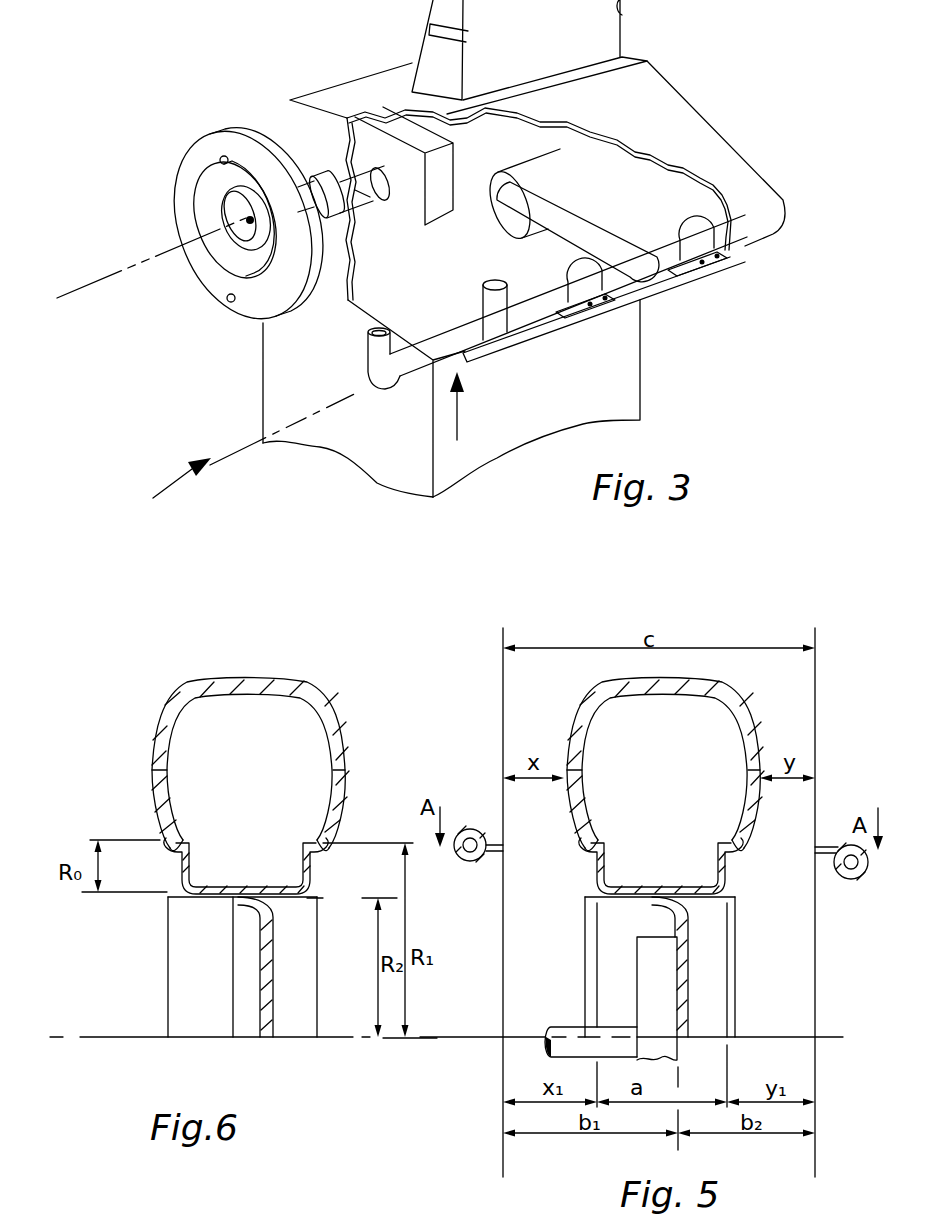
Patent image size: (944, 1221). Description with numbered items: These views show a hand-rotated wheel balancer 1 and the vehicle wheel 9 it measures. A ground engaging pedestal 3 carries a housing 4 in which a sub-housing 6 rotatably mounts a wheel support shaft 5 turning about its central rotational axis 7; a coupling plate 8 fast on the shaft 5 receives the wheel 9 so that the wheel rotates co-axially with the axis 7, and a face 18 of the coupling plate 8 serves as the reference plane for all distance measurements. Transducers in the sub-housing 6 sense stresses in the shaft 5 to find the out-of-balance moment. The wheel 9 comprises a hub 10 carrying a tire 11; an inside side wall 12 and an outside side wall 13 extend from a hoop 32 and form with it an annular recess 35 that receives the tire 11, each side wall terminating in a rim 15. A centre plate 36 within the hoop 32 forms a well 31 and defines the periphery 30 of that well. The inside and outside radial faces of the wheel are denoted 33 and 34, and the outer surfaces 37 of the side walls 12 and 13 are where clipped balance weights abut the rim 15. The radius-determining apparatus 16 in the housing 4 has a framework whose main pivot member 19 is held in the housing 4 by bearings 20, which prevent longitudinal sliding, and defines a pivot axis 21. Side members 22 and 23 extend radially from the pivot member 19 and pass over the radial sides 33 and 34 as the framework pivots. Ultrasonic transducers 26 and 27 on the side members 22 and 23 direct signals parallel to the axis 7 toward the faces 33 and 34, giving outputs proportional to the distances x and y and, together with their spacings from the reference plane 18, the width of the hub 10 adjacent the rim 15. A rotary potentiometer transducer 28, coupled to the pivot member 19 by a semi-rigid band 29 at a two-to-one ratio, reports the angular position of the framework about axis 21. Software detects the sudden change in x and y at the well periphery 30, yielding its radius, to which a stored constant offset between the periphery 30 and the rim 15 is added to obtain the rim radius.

In FIG. 3, the wheel balancer 1 is at (172, 489).
In FIG. 3, the ground engaging pedestal 3 is at (390, 473).
In FIG. 3, the housing 4 is at (663, 91).
In FIG. 3, the wheel support shaft 5 is at (363, 193).
In FIG. 5, the wheel support shaft 5 is at (560, 1028).
In FIG. 3, the sub-housing 6 is at (442, 202).
In FIG. 3, the rotational axis 7 is at (108, 268).
In FIG. 6, the rotational axis 7 is at (116, 1040).
In FIG. 5, the rotational axis 7 is at (828, 1045).
In FIG. 3, the coupling plate 8 is at (210, 292).
In FIG. 5, the coupling plate 8 is at (643, 980).
In FIG. 6, the vehicle wheel 9 is at (285, 682).
In FIG. 5, the vehicle wheel 9 is at (713, 983).
In FIG. 6, the hub 10 is at (303, 916).
In FIG. 5, the hub 10 is at (610, 943).
In FIG. 6, the tire 11 is at (333, 720).
In FIG. 5, the tire 11 is at (697, 692).
In FIG. 6, the inside side wall 12 is at (170, 878).
In FIG. 5, the inside side wall 12 is at (590, 877).
In FIG. 6, the outside side wall 13 is at (320, 883).
In FIG. 6, the rim 15 is at (166, 846).
In FIG. 5, the rim 15 is at (580, 847).
In FIG. 3, the radius determining apparatus 16 is at (471, 406).
In FIG. 3, the face of coupling plate 18 is at (182, 172).
In FIG. 5, the face of coupling plate 18 is at (680, 1057).
In FIG. 3, the main pivot member 19 is at (540, 307).
In FIG. 3, the bearings 20 is at (723, 246).
In FIG. 3, the pivot axis 21 is at (287, 432).
In FIG. 3, the side member 22 is at (512, 340).
In FIG. 5, the side member 22 is at (468, 822).
In FIG. 3, the side member 23 is at (368, 347).
In FIG. 5, the side member 23 is at (853, 880).
In FIG. 5, the ultrasonic transducer 26 is at (487, 860).
In FIG. 5, the ultrasonic transducer 27 is at (827, 843).
In FIG. 3, the rotary potentiometer transducer 28 is at (542, 216).
In FIG. 3, the semi-rigid band 29 is at (616, 228).
In FIG. 6, the periphery of the well 30 is at (205, 898).
In FIG. 5, the periphery of the well 30 is at (660, 916).
In FIG. 6, the well 31 is at (240, 970).
In FIG. 5, the well 31 is at (617, 960).
In FIG. 6, the hoop 32 is at (232, 888).
In FIG. 5, the hoop 32 is at (625, 897).
In FIG. 6, the inside radial face 33 is at (150, 747).
In FIG. 5, the inside radial face 33 is at (570, 722).
In FIG. 6, the outside radial face 34 is at (346, 758).
In FIG. 5, the outside radial face 34 is at (753, 723).
In FIG. 6, the annular recess 35 is at (268, 875).
In FIG. 5, the annular recess 35 is at (668, 883).
In FIG. 6, the centre plate 36 is at (270, 977).
In FIG. 5, the centre plate 36 is at (690, 1008).
In FIG. 6, the outer surfaces of side walls 37 is at (167, 867).
In FIG. 5, the outer surfaces of side walls 37 is at (587, 858).